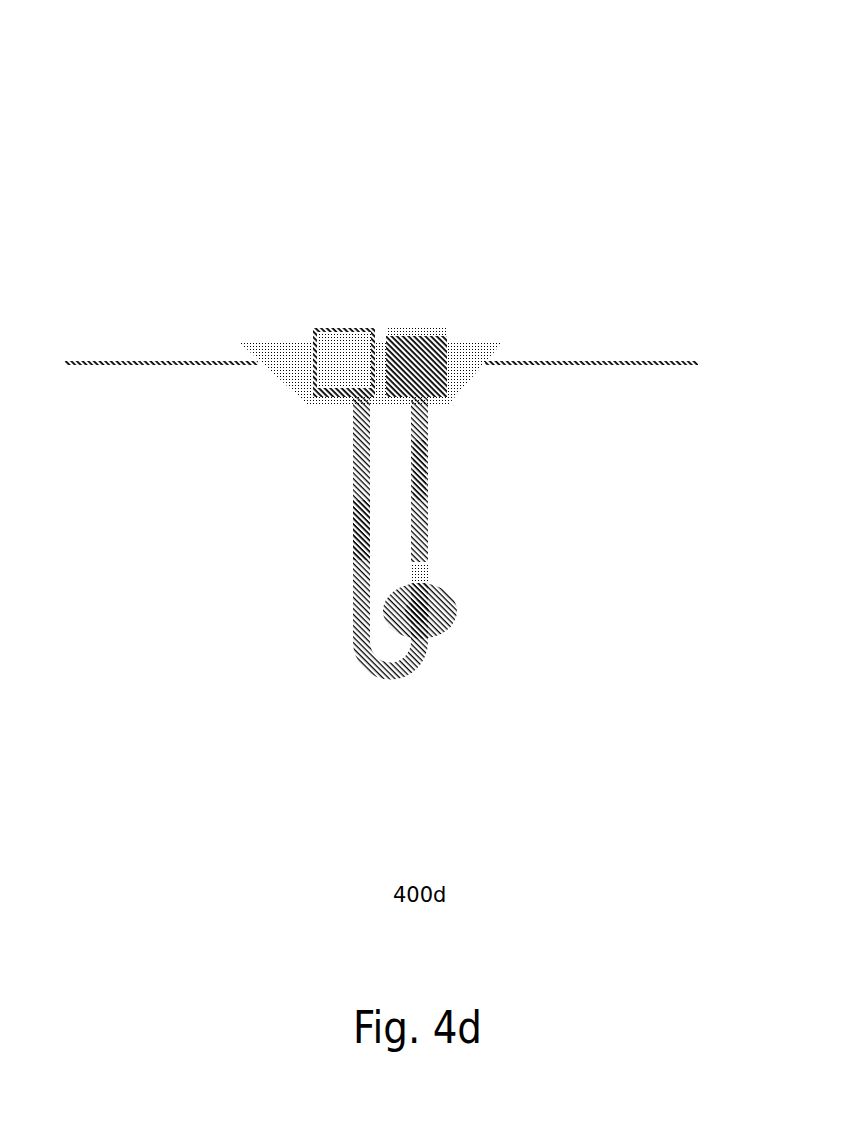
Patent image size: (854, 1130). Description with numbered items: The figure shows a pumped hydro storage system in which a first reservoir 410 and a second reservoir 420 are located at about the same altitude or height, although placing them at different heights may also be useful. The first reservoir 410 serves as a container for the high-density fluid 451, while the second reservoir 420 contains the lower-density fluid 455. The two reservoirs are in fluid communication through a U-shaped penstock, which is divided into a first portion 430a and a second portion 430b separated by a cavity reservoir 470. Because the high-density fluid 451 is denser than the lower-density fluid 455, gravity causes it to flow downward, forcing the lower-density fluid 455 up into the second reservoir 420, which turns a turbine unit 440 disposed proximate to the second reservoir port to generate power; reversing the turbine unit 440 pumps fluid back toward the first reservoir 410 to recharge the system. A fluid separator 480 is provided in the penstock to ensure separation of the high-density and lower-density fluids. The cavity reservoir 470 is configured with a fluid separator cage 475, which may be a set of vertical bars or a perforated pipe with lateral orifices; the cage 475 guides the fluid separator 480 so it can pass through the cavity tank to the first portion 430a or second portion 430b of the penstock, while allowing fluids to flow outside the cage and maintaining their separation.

The first reservoir 410 is at (343, 338).
The second reservoir 420 is at (435, 335).
The first portion of penstock 430a is at (435, 517).
The second portion of penstock 430b is at (350, 492).
The turbine unit 440 is at (428, 403).
The high-density fluid 451 is at (362, 532).
The lower-density fluid 455 is at (423, 463).
The cavity reservoir 470 is at (457, 617).
The fluid separator cage 475 is at (417, 612).
The fluid separator 480 is at (435, 565).